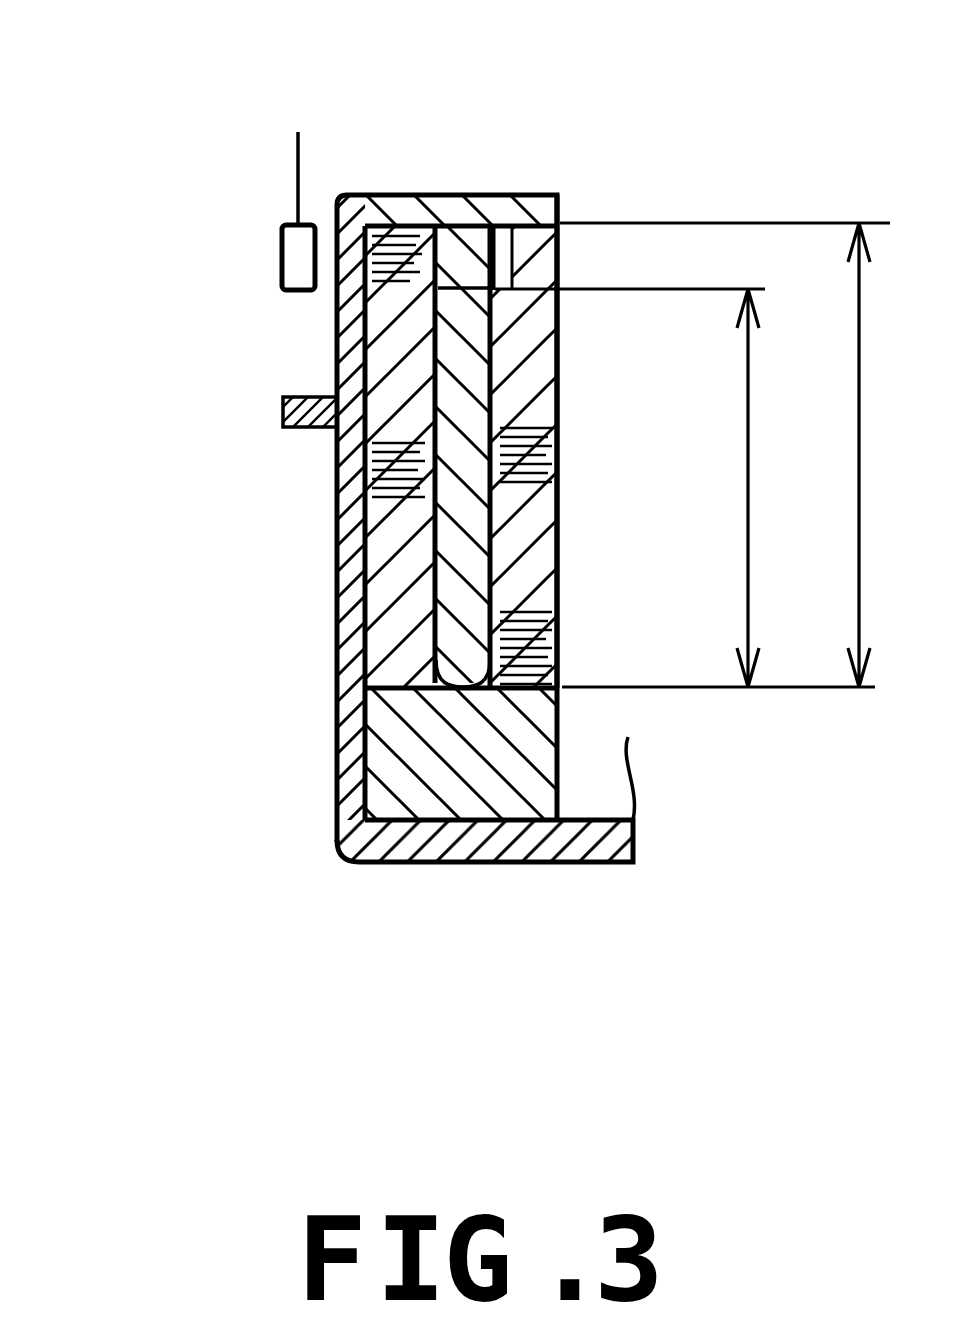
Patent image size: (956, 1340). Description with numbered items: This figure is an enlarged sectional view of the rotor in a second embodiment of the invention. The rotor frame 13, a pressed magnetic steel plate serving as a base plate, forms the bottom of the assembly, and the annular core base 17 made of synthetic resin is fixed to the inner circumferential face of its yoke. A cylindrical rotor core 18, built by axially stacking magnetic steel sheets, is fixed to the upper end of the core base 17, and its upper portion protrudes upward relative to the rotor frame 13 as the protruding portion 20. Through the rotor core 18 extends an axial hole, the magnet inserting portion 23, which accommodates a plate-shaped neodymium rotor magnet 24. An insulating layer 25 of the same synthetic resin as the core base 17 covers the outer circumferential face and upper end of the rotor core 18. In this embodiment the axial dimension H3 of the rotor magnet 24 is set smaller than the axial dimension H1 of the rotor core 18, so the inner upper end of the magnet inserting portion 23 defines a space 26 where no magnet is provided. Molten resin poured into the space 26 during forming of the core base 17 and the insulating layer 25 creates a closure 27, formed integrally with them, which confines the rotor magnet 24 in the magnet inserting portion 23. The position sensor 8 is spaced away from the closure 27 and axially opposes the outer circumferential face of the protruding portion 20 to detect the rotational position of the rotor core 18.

The position sensor 8 is at (282, 250).
The rotor frame 13 is at (452, 862).
The core base 17 is at (377, 772).
The rotor core 18 is at (559, 558).
The protruding portion 20 is at (365, 353).
The magnet inserting portion 23 is at (442, 594).
The rotor magnet 24 is at (420, 497).
The insulating layer 25 is at (534, 196).
The space 26 is at (448, 288).
The closure 27 is at (512, 228).
The axial dimension of the rotor core H1 is at (744, 455).
The axial dimension of the rotor magnet H3 is at (655, 488).